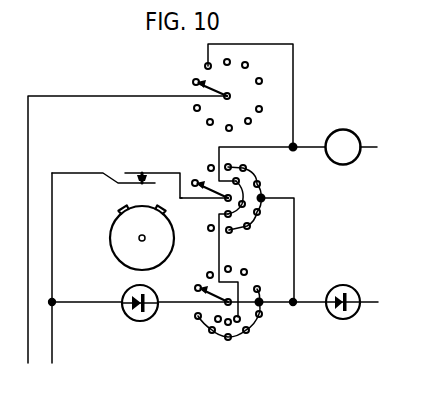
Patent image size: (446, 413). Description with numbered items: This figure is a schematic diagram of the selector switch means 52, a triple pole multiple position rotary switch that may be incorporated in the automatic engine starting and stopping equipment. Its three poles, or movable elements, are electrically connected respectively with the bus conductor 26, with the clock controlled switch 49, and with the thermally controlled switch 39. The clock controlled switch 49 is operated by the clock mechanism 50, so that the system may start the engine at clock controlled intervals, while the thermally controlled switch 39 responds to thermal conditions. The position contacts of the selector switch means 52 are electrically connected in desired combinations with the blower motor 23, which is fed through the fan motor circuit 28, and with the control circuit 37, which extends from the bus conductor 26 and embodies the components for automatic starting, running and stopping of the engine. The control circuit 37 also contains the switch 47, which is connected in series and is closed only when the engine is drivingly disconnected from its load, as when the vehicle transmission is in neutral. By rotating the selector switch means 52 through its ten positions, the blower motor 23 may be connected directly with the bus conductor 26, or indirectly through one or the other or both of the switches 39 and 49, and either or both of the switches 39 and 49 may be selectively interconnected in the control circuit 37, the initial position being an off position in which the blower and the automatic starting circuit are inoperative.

The bus conductor 26 is at (29, 141).
The clock controlled switch 49 is at (141, 171).
The clock mechanism 50 is at (118, 233).
The control circuit 37 is at (53, 323).
The thermally controlled switch 39 is at (151, 317).
The selector switch means 52 is at (222, 339).
The fan motor circuit 28 is at (311, 147).
The fan driving motor 23 is at (340, 164).
The transmission controlled switch 47 is at (337, 286).